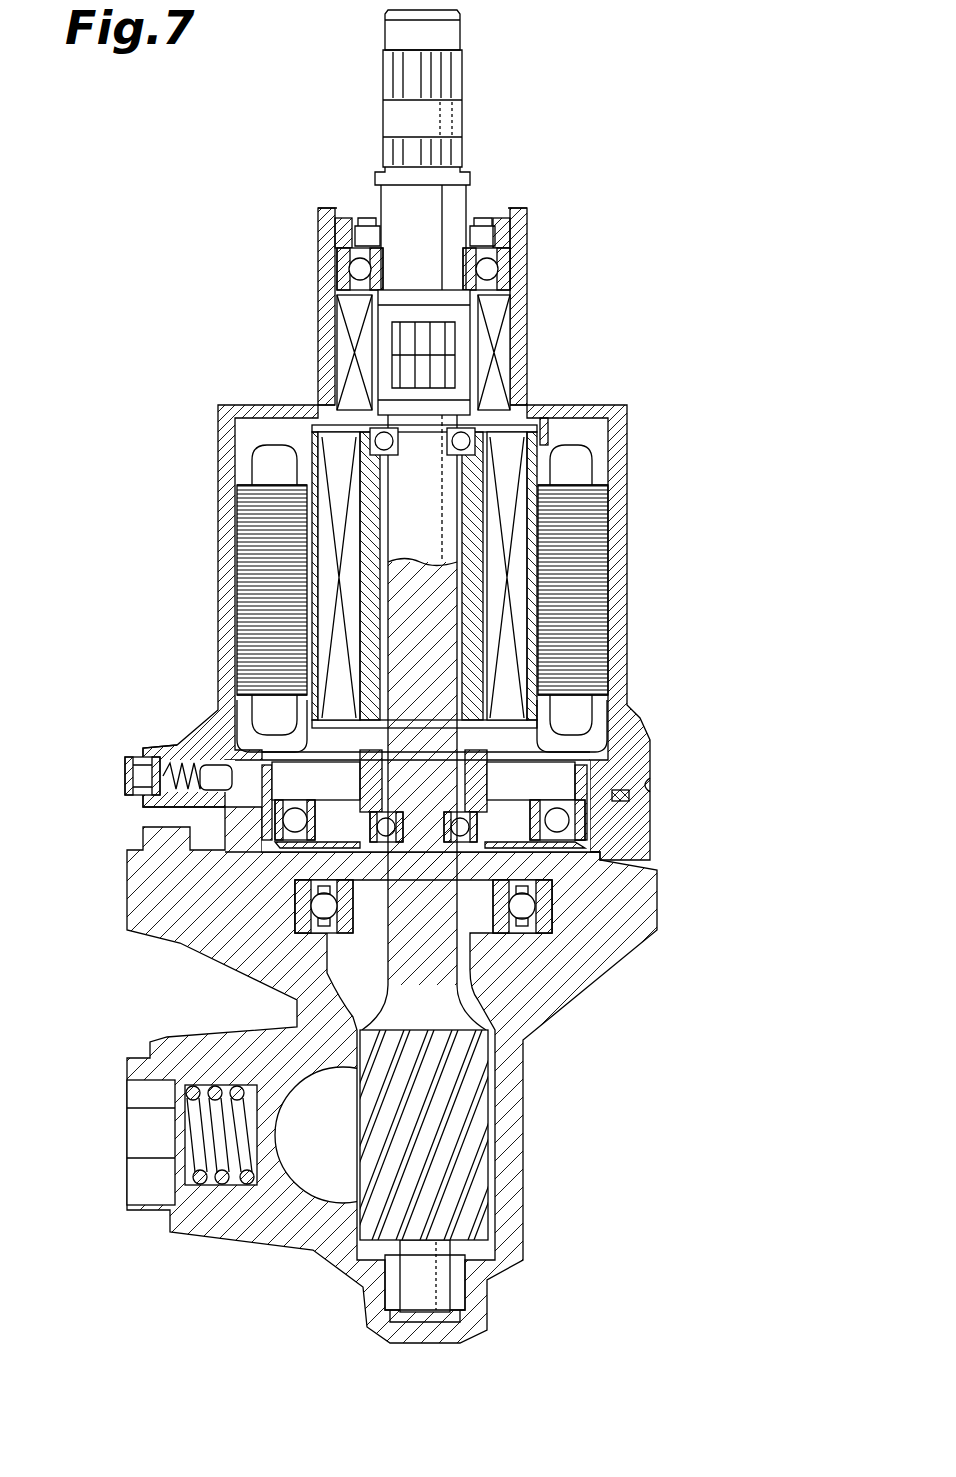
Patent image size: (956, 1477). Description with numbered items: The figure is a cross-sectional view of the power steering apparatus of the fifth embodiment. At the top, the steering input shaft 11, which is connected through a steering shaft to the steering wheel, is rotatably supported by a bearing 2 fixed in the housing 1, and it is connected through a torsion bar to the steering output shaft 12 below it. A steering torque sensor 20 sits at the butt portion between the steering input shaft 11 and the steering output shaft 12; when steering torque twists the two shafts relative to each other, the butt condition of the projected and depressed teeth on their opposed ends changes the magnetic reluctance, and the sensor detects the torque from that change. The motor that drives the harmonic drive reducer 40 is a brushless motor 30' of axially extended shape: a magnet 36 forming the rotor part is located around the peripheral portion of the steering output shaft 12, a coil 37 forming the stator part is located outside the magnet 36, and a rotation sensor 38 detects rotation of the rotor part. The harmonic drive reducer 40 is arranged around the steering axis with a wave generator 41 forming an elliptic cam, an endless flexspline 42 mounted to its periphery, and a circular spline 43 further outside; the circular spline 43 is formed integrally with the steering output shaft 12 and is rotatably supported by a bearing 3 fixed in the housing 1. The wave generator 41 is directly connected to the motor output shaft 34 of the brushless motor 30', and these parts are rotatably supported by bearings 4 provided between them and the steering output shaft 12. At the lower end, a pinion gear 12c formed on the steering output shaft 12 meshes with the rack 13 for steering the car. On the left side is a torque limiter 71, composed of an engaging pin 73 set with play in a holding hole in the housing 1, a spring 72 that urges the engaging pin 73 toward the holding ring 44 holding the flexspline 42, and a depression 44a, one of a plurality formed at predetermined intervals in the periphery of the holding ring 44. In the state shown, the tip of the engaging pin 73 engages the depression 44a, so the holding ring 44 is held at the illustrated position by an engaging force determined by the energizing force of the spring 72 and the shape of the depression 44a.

The housing 1 is at (620, 410).
The bearing 2 is at (492, 268).
The bearing 3 is at (585, 940).
The bearings 4 is at (337, 408).
The steering input shaft 11 is at (455, 308).
The steering output shaft 12 is at (446, 402).
The pinion gear 12c is at (470, 1170).
The rack 13 is at (300, 1180).
The steering torque sensor 20 is at (345, 335).
The brushless motor 30' is at (384, 555).
The motor output shaft 34 is at (480, 738).
The magnet 36 is at (342, 435).
The coil 37 is at (245, 548).
The rotation sensor 38 is at (560, 425).
The harmonic drive reducer 40 is at (268, 857).
The wave generator 41 is at (560, 822).
The flexspline 42 is at (288, 818).
The circular spline 43 is at (515, 848).
The holding ring 44 is at (235, 778).
The depression 44a is at (612, 790).
The torque limiter 71 is at (165, 730).
The spring 72 is at (148, 757).
The engaging pin 73 is at (190, 772).